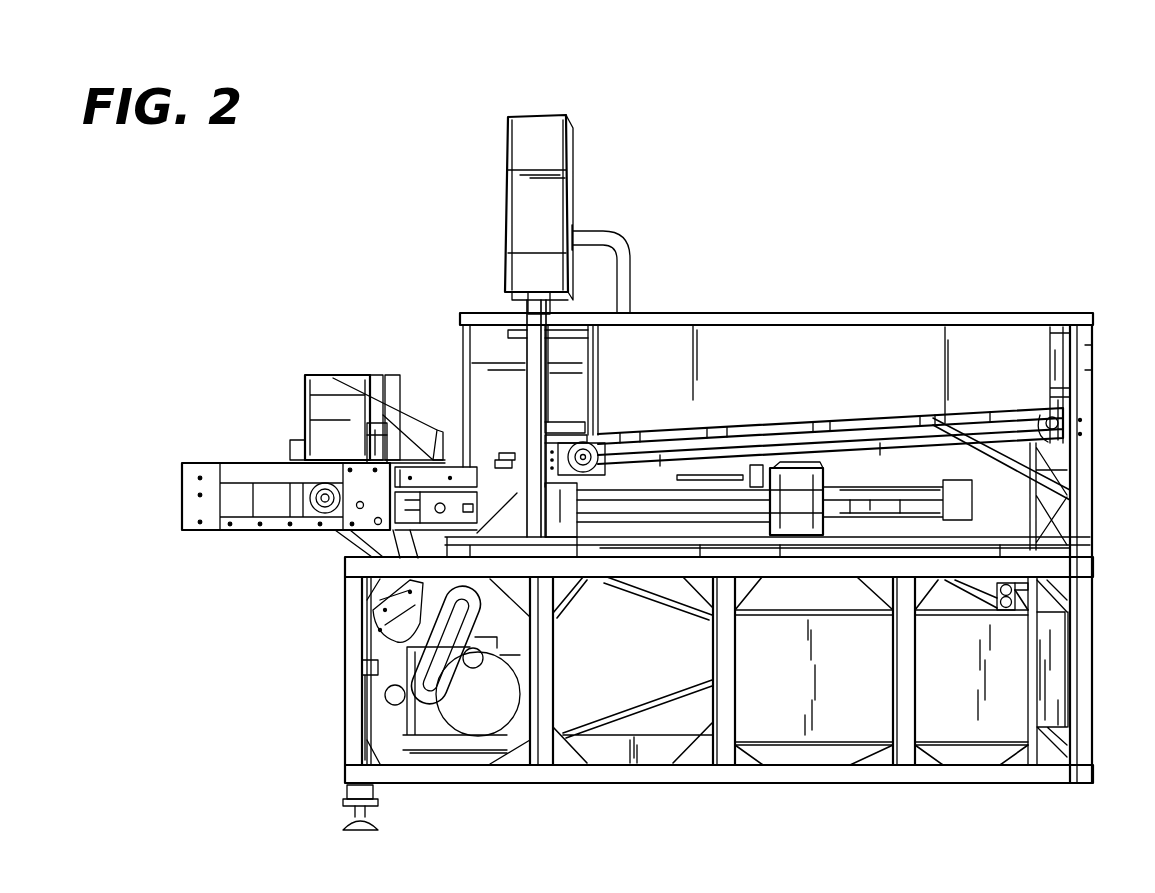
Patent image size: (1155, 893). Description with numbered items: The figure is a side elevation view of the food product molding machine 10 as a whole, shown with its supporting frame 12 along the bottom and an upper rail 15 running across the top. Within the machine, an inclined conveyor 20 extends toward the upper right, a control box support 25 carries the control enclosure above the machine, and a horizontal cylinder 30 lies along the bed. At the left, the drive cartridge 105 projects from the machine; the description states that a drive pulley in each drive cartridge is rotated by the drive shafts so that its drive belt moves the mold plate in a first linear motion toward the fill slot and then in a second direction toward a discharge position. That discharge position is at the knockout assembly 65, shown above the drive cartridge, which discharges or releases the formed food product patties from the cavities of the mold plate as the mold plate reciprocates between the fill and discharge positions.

The packaging machine 10 is at (1016, 145).
The frame 12 is at (348, 740).
The top rail 15 is at (855, 310).
The inclined conveyor 20 is at (880, 432).
The control box support 25 is at (479, 300).
The horizontal cylinder 30 is at (651, 498).
The knockout assembly 65 is at (321, 380).
The drive cartridge 105 is at (323, 548).